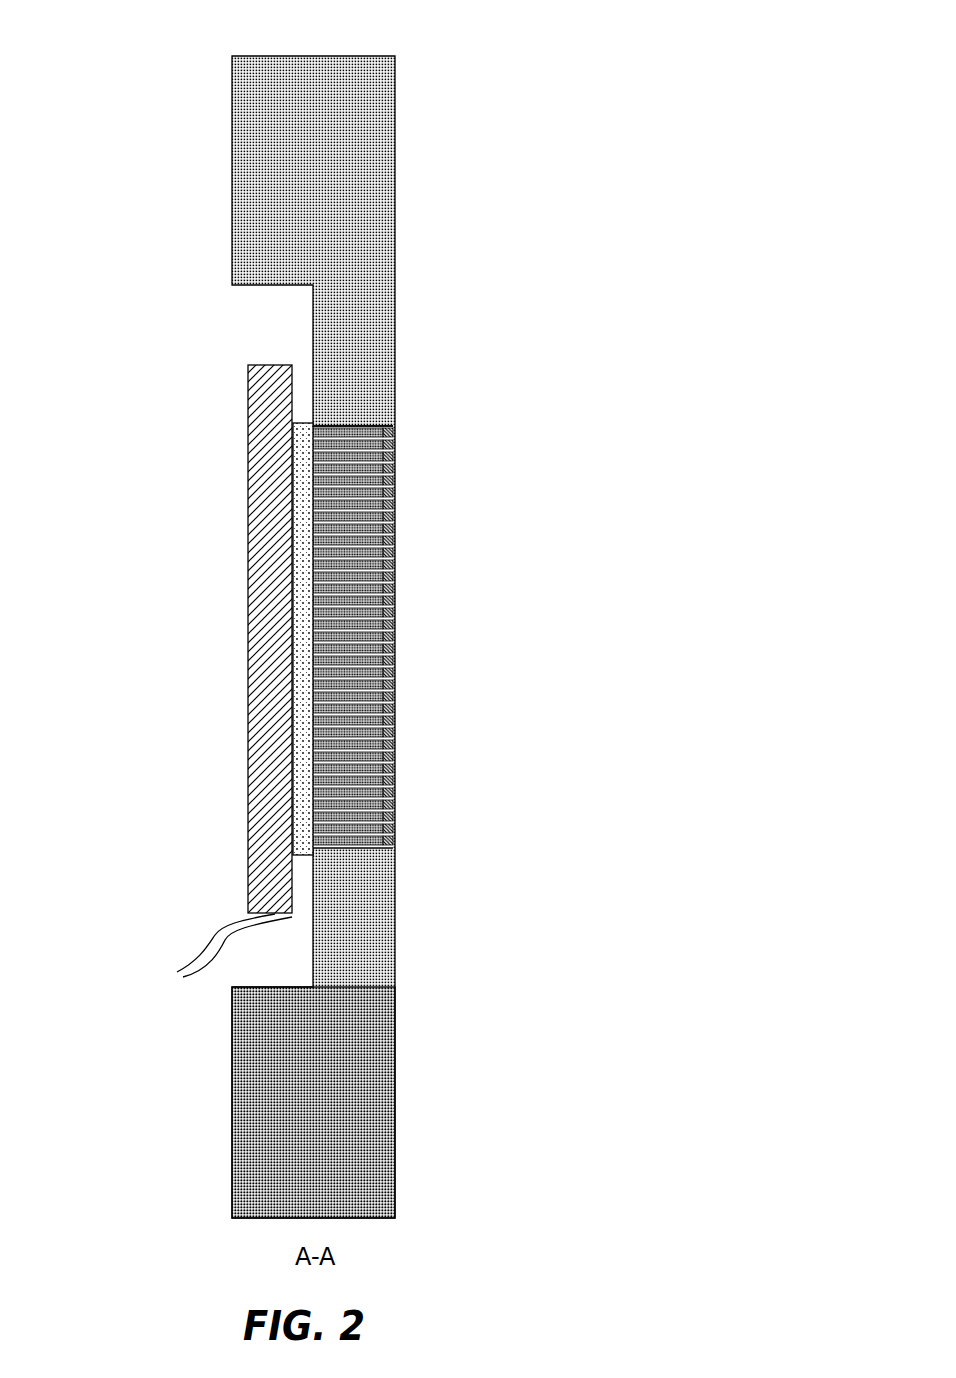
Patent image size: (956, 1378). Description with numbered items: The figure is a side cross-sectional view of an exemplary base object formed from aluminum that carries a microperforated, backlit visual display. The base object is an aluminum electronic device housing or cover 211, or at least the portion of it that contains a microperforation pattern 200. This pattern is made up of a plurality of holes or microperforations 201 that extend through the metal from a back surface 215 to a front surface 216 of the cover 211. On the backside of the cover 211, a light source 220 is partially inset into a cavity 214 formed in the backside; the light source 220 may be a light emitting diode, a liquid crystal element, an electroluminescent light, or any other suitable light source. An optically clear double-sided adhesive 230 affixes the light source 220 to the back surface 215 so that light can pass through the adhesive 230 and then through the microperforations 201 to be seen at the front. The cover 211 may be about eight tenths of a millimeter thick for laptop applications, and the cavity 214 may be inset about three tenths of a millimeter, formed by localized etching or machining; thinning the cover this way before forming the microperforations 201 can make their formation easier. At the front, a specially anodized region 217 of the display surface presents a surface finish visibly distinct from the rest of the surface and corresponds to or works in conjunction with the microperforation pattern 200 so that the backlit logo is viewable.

The microperforation pattern 200 is at (440, 638).
The microperforations 201 is at (362, 425).
The electronic device housing or cover 211 is at (513, 67).
The cavity 214 is at (235, 322).
The back surface 215 is at (303, 950).
The front surface 216 is at (402, 1022).
The anodized region 217 is at (400, 427).
The light source 220 is at (253, 888).
The optically clear double-sided adhesive 230 is at (302, 423).